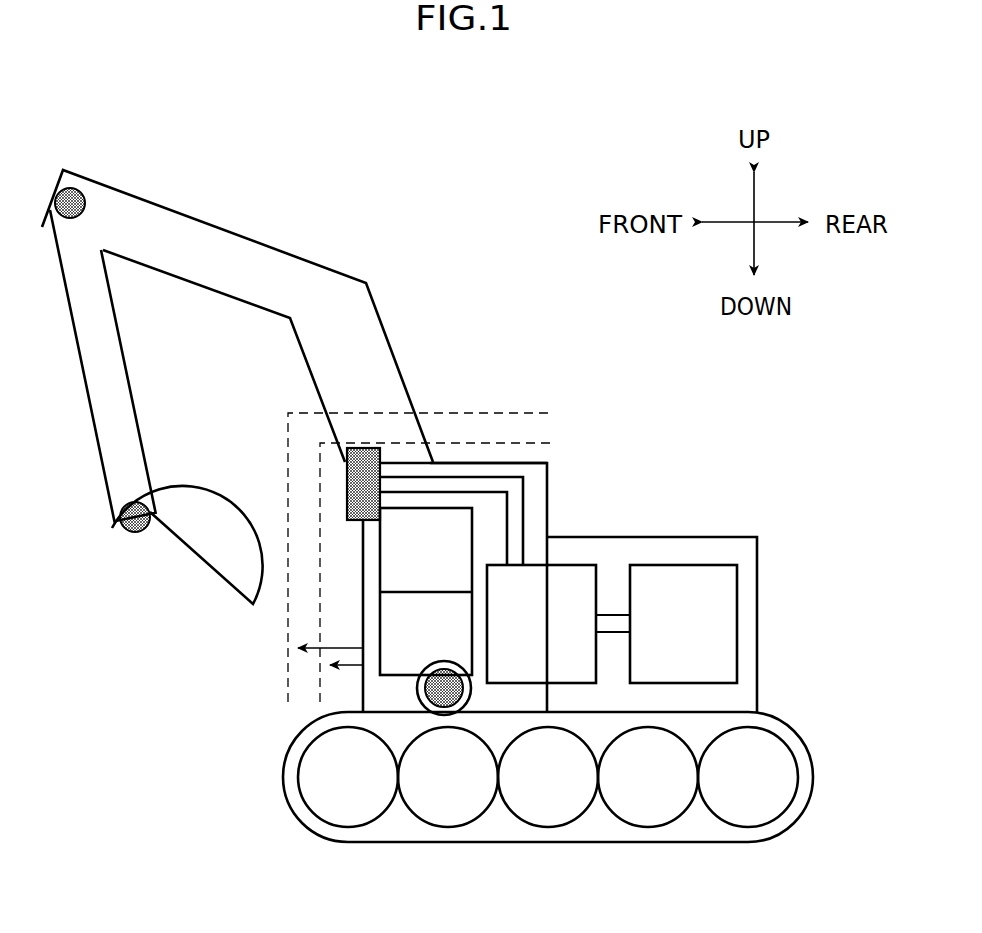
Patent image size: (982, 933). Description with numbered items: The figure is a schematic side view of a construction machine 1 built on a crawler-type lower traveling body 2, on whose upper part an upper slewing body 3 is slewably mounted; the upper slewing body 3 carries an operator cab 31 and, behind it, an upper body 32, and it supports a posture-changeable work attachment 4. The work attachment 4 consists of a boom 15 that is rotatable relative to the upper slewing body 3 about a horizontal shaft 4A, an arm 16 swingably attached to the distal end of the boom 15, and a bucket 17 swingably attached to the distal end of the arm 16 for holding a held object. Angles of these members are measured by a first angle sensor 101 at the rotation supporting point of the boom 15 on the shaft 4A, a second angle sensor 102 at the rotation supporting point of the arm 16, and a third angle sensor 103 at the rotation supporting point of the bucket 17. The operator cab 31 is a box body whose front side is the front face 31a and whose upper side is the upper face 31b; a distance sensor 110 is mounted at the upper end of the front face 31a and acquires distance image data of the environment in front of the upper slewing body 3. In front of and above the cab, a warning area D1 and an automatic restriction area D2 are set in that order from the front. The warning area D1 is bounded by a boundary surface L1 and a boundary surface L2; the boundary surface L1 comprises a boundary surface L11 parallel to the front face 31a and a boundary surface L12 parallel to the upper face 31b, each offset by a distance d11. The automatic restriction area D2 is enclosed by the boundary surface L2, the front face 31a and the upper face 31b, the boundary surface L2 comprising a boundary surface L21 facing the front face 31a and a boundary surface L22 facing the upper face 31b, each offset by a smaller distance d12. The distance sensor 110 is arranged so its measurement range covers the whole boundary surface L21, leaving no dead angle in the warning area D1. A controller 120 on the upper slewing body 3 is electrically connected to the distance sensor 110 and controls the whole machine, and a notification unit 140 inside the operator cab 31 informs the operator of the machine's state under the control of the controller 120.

The construction machine 1 is at (452, 132).
The lower traveling body 2 is at (830, 727).
The upper slewing body 3 is at (808, 602).
The work attachment 4 is at (212, 188).
The shaft 4A is at (412, 693).
The boom 15 is at (366, 317).
The arm 16 is at (108, 345).
The bucket 17 is at (152, 630).
The operator cab 31 is at (537, 503).
The front face 31a is at (366, 565).
The upper face 31b is at (507, 462).
The upper body 32 is at (757, 542).
The first angle sensor 101 is at (443, 712).
The second angle sensor 102 is at (72, 188).
The third angle sensor 103 is at (128, 503).
The distance sensor 110 is at (365, 447).
The controller 120 is at (587, 563).
The notification unit 140 is at (697, 563).
The boundary surface L1 is at (288, 480).
The boundary surface L11 is at (288, 445).
The boundary surface L12 is at (306, 412).
The boundary surface L2 is at (320, 495).
The boundary surface L21 is at (320, 527).
The boundary surface L22 is at (445, 442).
The warning area D1 is at (552, 413).
The automatic restriction area D2 is at (552, 443).
The distance d11 is at (320, 648).
The distance d12 is at (347, 668).